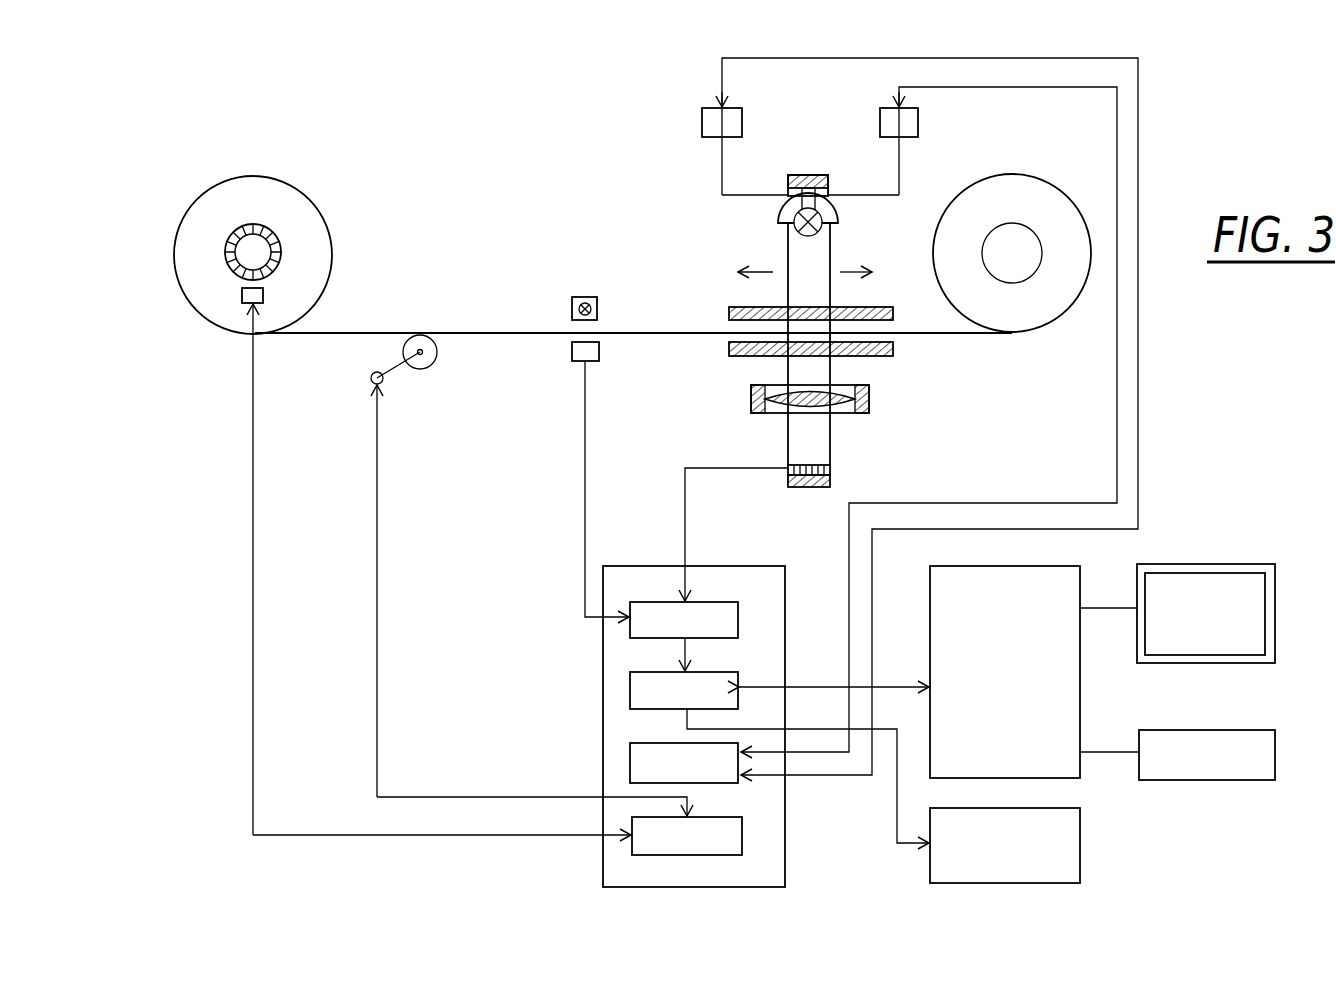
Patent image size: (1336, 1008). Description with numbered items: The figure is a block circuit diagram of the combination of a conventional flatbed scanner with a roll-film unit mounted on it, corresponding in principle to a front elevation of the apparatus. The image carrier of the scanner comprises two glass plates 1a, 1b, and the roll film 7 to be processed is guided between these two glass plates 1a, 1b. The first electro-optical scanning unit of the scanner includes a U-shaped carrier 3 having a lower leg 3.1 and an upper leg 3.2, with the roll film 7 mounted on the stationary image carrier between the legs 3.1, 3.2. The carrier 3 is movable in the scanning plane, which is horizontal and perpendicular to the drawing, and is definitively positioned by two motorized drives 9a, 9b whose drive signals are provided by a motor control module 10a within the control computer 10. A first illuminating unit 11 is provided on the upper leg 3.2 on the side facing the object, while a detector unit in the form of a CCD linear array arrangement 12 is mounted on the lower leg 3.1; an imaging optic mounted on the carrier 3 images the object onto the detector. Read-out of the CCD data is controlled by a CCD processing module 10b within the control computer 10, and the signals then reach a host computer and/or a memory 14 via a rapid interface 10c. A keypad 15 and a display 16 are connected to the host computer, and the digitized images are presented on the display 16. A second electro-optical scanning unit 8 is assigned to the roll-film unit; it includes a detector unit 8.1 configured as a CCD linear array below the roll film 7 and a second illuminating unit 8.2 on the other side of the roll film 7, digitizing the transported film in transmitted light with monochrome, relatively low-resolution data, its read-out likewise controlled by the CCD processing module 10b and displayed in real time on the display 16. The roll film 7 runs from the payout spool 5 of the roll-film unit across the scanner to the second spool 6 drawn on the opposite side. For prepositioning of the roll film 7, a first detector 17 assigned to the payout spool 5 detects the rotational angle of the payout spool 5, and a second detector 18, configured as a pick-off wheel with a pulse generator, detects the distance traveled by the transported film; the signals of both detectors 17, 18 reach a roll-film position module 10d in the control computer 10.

The glass plate 1a is at (728, 350).
The glass plate 1b is at (728, 312).
The U-shaped carrier 3 is at (788, 357).
The lower leg 3.1 is at (806, 488).
The upper leg 3.2 is at (790, 183).
The payout spool 5 is at (321, 249).
The take-up reel 6 is at (1010, 175).
The roll film 7 is at (474, 334).
The second electro-optical scanning unit 8 is at (556, 425).
The detector unit 8.1 is at (575, 358).
The second illuminating unit 8.2 is at (591, 297).
The motorized drive 9a is at (702, 125).
The motorized drive 9b is at (880, 125).
The control computer 10 is at (704, 726).
The motor control module 10a is at (728, 772).
The CCD processing module 10b is at (728, 622).
The rapid interface 10c is at (728, 688).
The roll-film position module 10d is at (728, 838).
The first illuminating unit 11 is at (840, 208).
The CCD linear array arrangement 12 is at (833, 467).
The memory 14 is at (1068, 858).
The keypad 15 is at (1190, 772).
The display 16 is at (1265, 660).
The first detector 17 is at (240, 298).
The second detector 18 is at (422, 361).